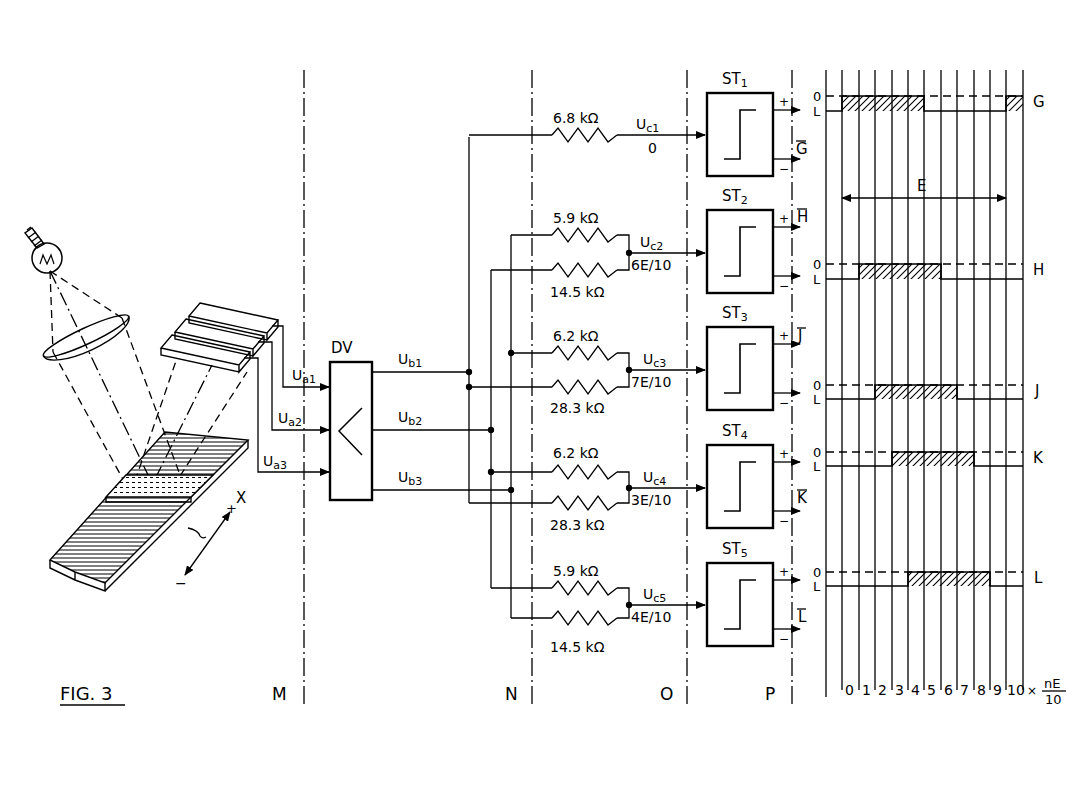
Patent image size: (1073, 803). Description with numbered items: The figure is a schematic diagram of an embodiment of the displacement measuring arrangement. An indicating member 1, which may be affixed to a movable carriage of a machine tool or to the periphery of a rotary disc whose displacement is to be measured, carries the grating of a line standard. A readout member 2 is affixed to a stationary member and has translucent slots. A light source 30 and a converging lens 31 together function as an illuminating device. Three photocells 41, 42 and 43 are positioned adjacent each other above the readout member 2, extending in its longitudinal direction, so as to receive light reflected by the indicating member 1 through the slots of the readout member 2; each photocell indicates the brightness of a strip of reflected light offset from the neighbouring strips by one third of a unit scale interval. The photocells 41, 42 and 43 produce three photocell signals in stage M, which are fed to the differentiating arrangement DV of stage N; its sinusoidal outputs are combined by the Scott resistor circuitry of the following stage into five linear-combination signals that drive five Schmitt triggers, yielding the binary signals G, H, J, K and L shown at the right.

The indicating member 1 is at (72, 537).
The readout member 2 is at (104, 494).
The light source 30 is at (60, 252).
The converging lens 31 is at (44, 357).
The photocell 41 is at (201, 310).
The photocell 42 is at (186, 327).
The photocell 43 is at (171, 343).